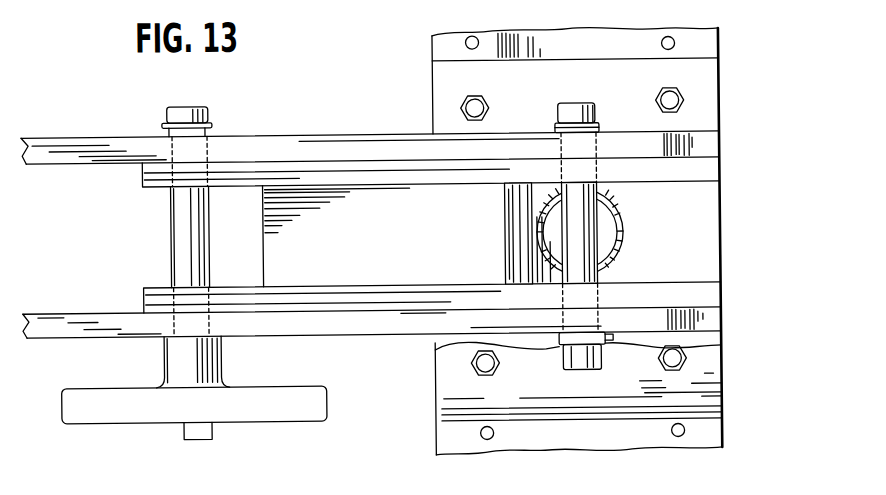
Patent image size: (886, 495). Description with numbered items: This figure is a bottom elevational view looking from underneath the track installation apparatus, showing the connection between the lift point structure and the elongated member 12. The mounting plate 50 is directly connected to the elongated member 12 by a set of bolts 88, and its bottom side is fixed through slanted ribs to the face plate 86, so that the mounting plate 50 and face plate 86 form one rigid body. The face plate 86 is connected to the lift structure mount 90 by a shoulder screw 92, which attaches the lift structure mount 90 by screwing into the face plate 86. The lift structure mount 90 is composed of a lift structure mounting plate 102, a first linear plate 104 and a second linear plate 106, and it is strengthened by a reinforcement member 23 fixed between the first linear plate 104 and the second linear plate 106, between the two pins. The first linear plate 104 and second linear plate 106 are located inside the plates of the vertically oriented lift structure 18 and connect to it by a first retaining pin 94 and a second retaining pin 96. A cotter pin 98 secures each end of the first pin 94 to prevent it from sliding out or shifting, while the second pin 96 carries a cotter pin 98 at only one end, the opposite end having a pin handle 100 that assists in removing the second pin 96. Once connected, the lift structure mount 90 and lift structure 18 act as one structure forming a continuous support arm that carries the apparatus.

The elongated member 12 is at (720, 50).
The lift structure 18 is at (310, 133).
The reinforcement member 23 is at (421, 253).
The mounting plate 50 is at (720, 88).
The face plate 86 is at (720, 148).
The bolts 88 is at (462, 112).
The lift structure mount 90 is at (247, 188).
The shoulder screw 92 is at (624, 241).
The first retaining pin 94 is at (579, 104).
The second retaining pin 96 is at (171, 225).
The cotter pin 98 is at (162, 123).
The pin handle 100 is at (298, 421).
The lift structure mounting plate 102 is at (720, 261).
The first linear plate 104 is at (712, 293).
The second linear plate 106 is at (720, 173).